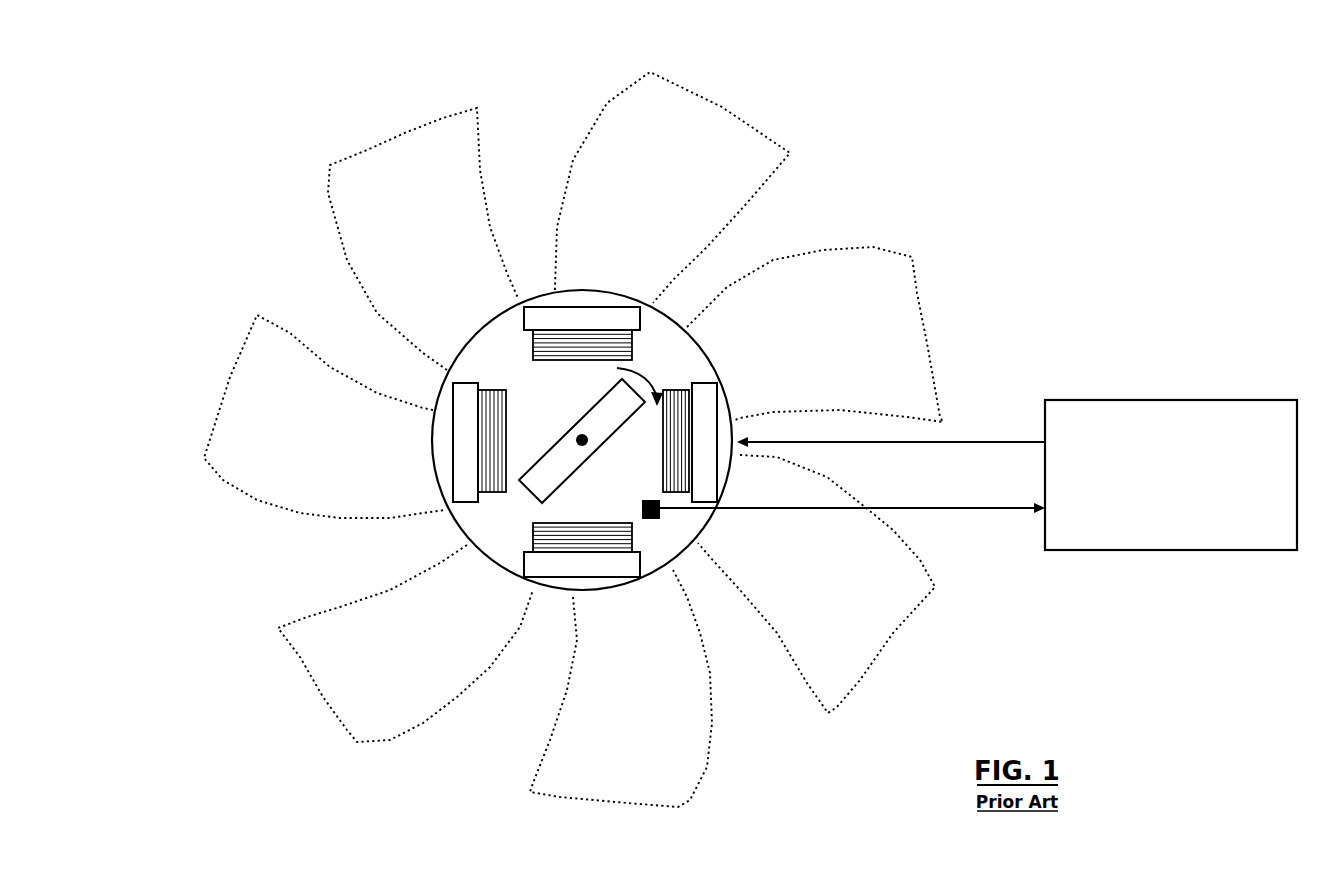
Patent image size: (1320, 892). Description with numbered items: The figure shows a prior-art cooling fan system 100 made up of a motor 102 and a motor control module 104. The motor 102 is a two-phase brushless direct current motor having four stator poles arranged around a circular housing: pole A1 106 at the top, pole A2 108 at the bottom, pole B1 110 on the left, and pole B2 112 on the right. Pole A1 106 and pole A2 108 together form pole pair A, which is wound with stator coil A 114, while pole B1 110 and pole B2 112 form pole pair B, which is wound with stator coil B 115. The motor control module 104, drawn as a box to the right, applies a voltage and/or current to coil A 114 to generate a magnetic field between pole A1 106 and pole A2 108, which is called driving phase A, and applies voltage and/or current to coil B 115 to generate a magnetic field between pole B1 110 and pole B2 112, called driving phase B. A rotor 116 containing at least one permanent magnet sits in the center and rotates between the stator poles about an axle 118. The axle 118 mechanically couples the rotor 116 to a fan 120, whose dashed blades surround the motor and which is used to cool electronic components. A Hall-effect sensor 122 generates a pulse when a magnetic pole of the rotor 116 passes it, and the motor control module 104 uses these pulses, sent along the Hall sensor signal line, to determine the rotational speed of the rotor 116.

The cooling fan system 100 is at (293, 101).
The motor 102 is at (710, 360).
The motor control module 104 is at (1170, 400).
The pole A1 106 is at (523, 320).
The pole A2 108 is at (523, 558).
The pole B1 110 is at (472, 383).
The pole B2 112 is at (700, 383).
The stator coil A 114 is at (580, 360).
The stator coil B 115 is at (663, 443).
The rotor 116 is at (583, 458).
The axle 118 is at (576, 441).
The fan 120 is at (722, 110).
The Hall-effect sensor 122 is at (651, 519).